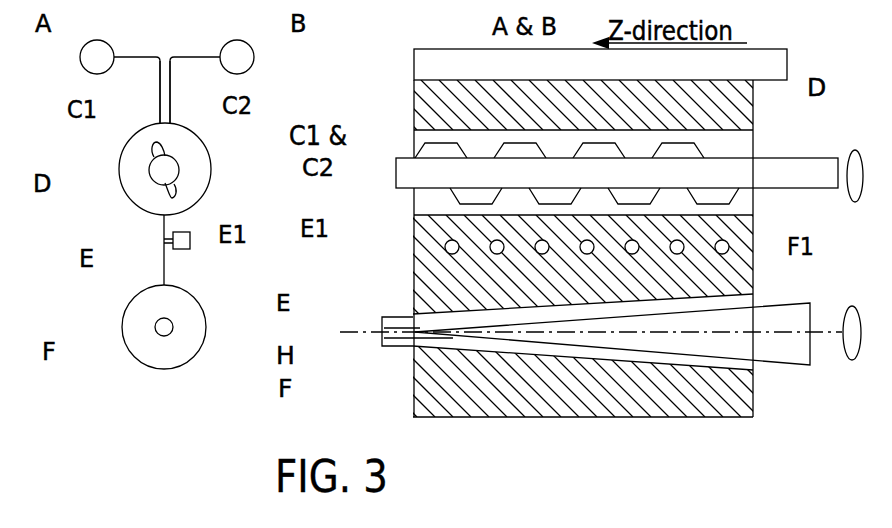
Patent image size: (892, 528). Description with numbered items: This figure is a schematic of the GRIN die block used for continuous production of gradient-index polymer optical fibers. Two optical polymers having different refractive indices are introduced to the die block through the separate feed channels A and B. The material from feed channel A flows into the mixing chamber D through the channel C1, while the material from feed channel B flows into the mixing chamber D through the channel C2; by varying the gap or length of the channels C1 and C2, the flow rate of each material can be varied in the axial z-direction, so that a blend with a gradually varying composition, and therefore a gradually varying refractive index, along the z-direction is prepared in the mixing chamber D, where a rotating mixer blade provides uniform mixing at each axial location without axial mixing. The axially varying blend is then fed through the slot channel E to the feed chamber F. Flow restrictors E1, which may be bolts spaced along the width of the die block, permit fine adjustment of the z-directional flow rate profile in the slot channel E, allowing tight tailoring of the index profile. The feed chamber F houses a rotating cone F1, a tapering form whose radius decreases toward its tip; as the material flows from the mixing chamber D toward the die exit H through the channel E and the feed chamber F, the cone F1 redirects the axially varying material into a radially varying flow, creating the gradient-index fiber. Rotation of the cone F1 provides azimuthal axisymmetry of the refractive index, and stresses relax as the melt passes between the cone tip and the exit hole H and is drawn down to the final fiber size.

The feed channel A is at (478, 29).
The feed channel B is at (254, 56).
The channel C1 is at (423, 116).
The channel C2 is at (220, 97).
The mixing chamber D is at (815, 102).
The channel E is at (450, 298).
The flow restrictor E1 is at (450, 246).
The feed chamber F is at (413, 345).
The rotating cone F1 is at (757, 322).
The die exit H is at (382, 330).